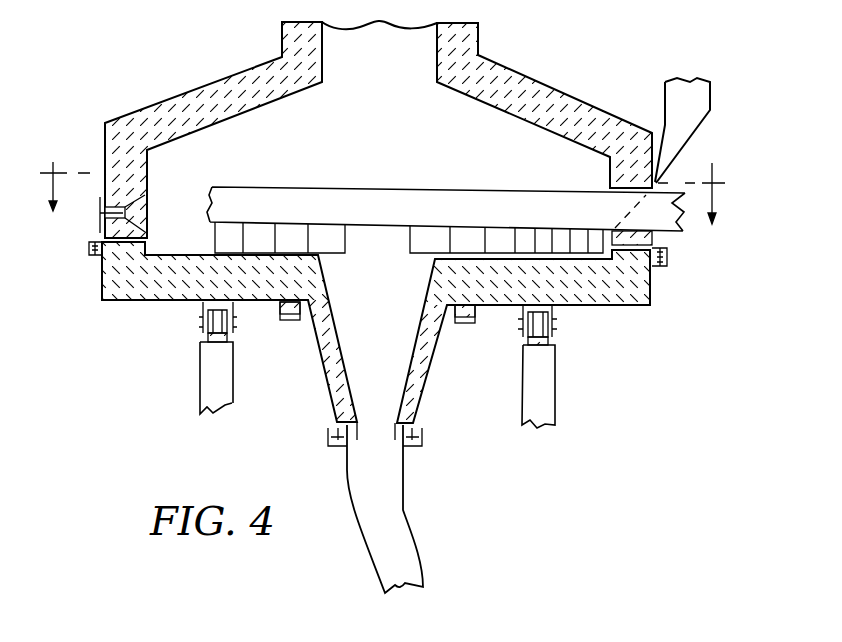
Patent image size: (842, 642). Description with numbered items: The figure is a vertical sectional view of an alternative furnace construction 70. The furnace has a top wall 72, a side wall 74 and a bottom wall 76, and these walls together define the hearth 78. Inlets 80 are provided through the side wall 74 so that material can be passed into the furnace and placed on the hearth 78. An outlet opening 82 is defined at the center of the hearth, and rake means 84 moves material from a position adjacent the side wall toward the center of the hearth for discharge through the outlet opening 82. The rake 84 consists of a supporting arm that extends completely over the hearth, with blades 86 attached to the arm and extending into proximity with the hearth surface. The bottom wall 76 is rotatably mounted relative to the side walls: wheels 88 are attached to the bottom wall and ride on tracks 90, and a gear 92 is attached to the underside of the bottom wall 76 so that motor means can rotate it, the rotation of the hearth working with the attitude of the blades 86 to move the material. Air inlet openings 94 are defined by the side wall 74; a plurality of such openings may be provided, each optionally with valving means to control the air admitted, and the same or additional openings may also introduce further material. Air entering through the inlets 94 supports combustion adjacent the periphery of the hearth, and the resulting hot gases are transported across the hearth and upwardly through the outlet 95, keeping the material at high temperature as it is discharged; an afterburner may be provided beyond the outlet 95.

The furnace construction 70 is at (131, 68).
The top wall 72 is at (228, 105).
The side wall 74 is at (123, 143).
The bottom wall 76 is at (160, 302).
The hearth 78 is at (177, 254).
The inlets 80 is at (683, 125).
The outlet opening 82 is at (427, 295).
The rake means 84 is at (348, 200).
The blades 86 is at (470, 235).
The wheels 88 is at (227, 337).
The tracks 90 is at (203, 333).
The gear 92 is at (465, 323).
The air inlet openings 94 is at (100, 213).
The outlet 95 is at (378, 60).